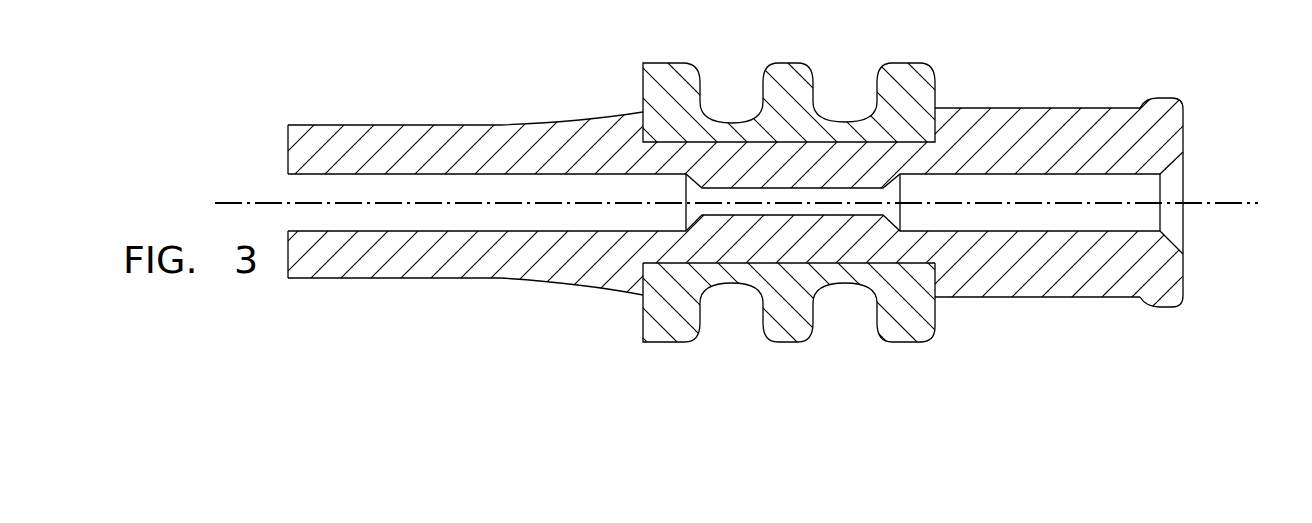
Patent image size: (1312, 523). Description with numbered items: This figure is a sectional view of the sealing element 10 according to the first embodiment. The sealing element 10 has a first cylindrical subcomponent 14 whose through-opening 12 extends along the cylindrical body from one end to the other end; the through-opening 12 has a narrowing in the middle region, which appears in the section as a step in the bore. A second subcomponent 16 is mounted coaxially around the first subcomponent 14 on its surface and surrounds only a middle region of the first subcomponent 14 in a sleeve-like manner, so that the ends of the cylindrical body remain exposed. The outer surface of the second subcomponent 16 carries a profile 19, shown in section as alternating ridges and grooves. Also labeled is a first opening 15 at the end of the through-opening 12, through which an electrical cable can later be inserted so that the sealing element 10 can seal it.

The sealing element 10 is at (514, 82).
The through-opening 12 is at (1190, 170).
The first cylindrical subcomponent 14 is at (1050, 128).
The first openings 15 is at (1157, 217).
The second subcomponent 16 is at (922, 330).
The profile 19 is at (787, 328).